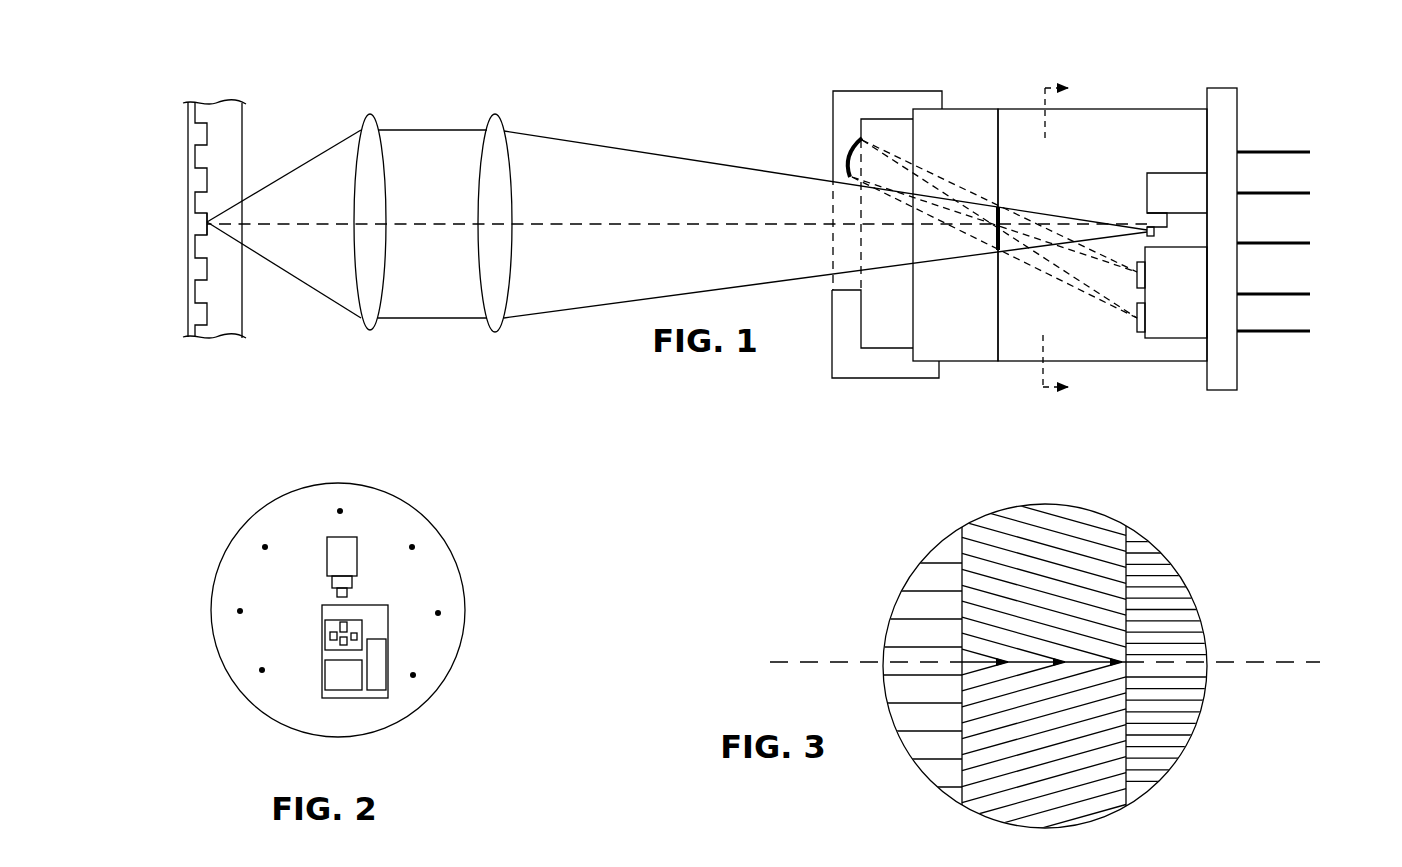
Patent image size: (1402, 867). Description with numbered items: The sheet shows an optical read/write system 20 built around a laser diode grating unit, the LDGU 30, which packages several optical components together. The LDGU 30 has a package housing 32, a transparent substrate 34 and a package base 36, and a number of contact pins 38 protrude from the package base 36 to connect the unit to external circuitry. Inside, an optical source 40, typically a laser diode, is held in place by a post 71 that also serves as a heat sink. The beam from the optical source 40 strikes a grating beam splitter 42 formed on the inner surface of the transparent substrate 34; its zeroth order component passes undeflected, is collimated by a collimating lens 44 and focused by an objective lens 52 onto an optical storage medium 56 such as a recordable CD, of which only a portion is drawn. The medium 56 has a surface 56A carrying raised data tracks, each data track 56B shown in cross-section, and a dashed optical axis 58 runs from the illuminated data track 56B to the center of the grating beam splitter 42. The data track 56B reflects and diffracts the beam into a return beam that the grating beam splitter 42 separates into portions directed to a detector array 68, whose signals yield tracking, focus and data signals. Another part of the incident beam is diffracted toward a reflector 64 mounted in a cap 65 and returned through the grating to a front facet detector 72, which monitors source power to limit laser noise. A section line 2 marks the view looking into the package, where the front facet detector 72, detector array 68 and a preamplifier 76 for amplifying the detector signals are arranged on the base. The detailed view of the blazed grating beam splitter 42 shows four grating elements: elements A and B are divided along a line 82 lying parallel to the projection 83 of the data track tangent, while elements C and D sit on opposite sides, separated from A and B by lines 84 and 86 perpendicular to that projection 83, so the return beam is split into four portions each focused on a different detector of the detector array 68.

In FIG. 1, the system 20 is at (563, 66).
In FIG. 1, the LDGU 30 is at (1025, 53).
In FIG. 2, the LDGU 30 is at (218, 506).
In FIG. 1, the package housing 32 is at (1118, 110).
In FIG. 2, the package housing 32 is at (288, 493).
In FIG. 1, the transparent substrate 34 is at (970, 109).
In FIG. 1, the package base 36 is at (1223, 88).
In FIG. 1, the contact pins 38 is at (1305, 243).
In FIG. 2, the contact pins 38 is at (342, 507).
In FIG. 1, the optical source 40 is at (1147, 228).
In FIG. 2, the optical source 40 is at (350, 596).
In FIG. 1, the grating beam splitter 42 is at (998, 242).
In FIG. 3, the grating beam splitter 42 is at (835, 546).
In FIG. 1, the collimating lens 44 is at (495, 114).
In FIG. 1, the objective lens 52 is at (370, 114).
In FIG. 1, the optical storage medium 56 is at (176, 101).
In FIG. 1, the surface 56A is at (197, 243).
In FIG. 1, the data track 56B is at (207, 222).
In FIG. 1, the optical axis 58 is at (670, 225).
In FIG. 1, the reflector 64 is at (848, 160).
In FIG. 1, the cap 65 is at (886, 91).
In FIG. 1, the detector array 68 is at (1142, 279).
In FIG. 2, the detector array 68 is at (322, 646).
In FIG. 2, the post 71 is at (327, 544).
In FIG. 1, the front facet detector 72 is at (1137, 325).
In FIG. 2, the front facet detector 72 is at (323, 685).
In FIG. 2, the preamplifier 76 is at (388, 660).
In FIG. 3, the line 82 is at (1040, 662).
In FIG. 3, the projection 83 is at (813, 660).
In FIG. 3, the line 84 is at (962, 545).
In FIG. 3, the line 86 is at (1128, 545).
In FIG. 1, the section line 2 is at (1055, 240).